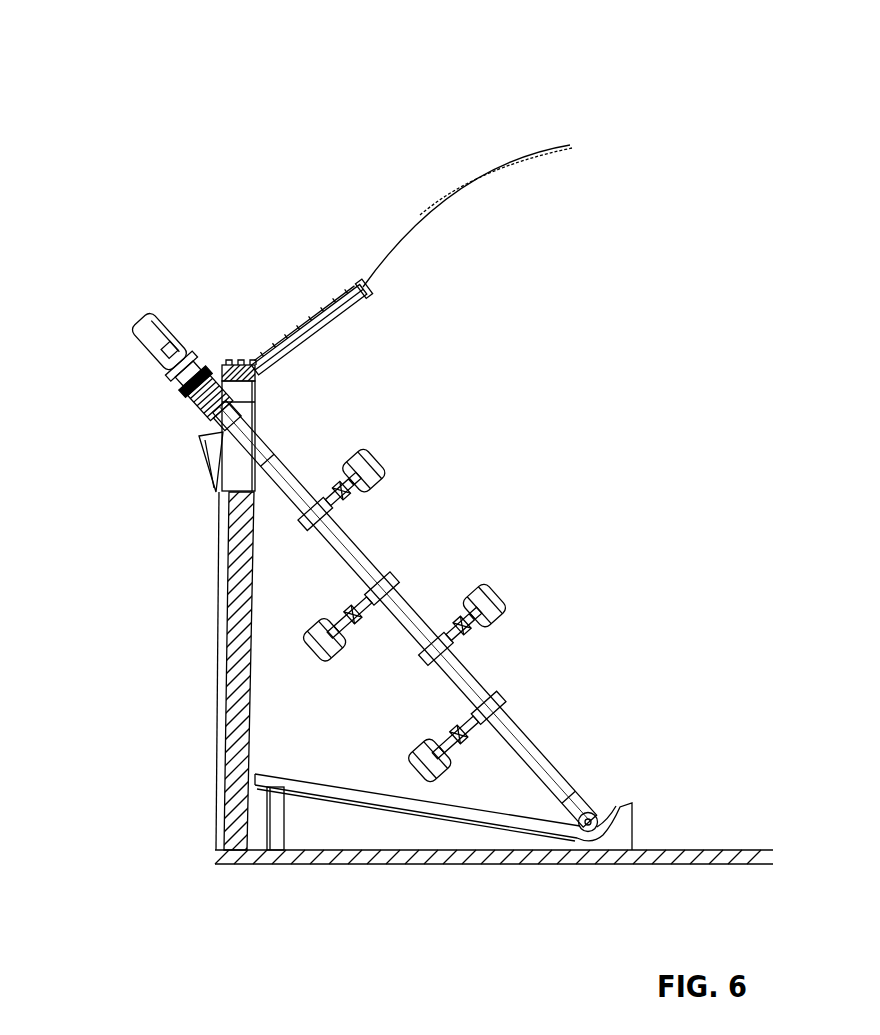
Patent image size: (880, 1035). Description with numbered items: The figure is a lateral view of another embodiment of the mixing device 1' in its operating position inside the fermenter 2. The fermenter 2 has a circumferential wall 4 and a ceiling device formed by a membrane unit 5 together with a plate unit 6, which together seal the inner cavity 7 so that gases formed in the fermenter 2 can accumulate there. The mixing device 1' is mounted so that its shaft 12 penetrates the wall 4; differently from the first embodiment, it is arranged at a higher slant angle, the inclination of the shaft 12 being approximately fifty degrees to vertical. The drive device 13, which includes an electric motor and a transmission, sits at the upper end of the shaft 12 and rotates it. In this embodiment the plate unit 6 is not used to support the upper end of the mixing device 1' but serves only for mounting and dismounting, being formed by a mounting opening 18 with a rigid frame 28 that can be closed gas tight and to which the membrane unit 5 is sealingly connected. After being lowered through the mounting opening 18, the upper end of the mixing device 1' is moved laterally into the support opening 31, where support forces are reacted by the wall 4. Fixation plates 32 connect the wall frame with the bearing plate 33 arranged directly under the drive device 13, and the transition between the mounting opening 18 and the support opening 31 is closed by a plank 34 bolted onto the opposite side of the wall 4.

The mixing device 1' is at (419, 556).
The fermenter 2 is at (419, 614).
The inner cavity 7 is at (419, 614).
The circumferential wall 4 is at (240, 662).
The membrane unit 5 is at (510, 163).
The plate unit 6 is at (306, 266).
The mounting opening 18 is at (298, 303).
The shaft 12 is at (410, 618).
The drive device 13 is at (161, 313).
The rigid frame 28 is at (325, 323).
The support opening 31 is at (237, 460).
The fixation plates 32 is at (198, 438).
The bearing plate 33 is at (207, 422).
The plank 34 is at (243, 368).